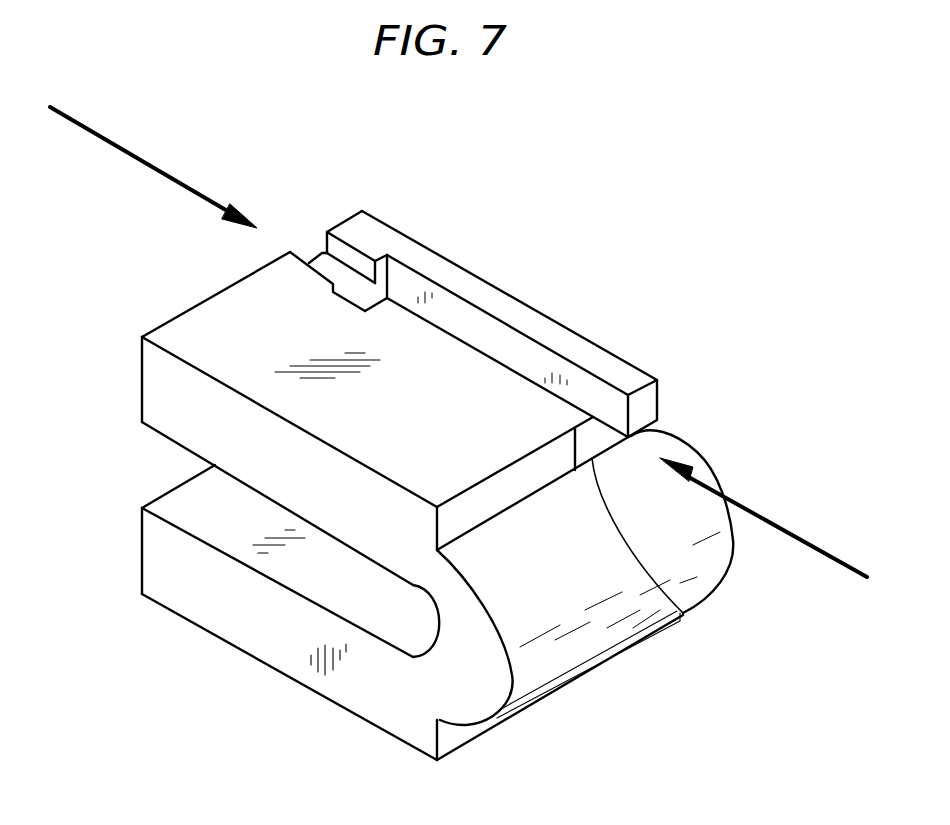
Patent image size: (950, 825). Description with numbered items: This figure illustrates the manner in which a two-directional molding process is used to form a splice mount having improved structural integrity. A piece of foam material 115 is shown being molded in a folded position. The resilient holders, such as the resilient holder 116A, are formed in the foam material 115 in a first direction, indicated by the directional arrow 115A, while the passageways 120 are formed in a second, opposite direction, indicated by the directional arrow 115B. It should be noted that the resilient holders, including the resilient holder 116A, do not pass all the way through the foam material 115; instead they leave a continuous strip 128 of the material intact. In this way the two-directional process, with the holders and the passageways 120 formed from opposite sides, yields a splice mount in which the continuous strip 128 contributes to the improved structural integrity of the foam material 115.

The foam material 115 is at (143, 386).
The directional arrow 115A is at (787, 527).
The directional arrow 115B is at (115, 143).
The resilient holder 116A is at (497, 315).
The passageway 120 is at (322, 253).
The continuous strip 128 is at (683, 613).